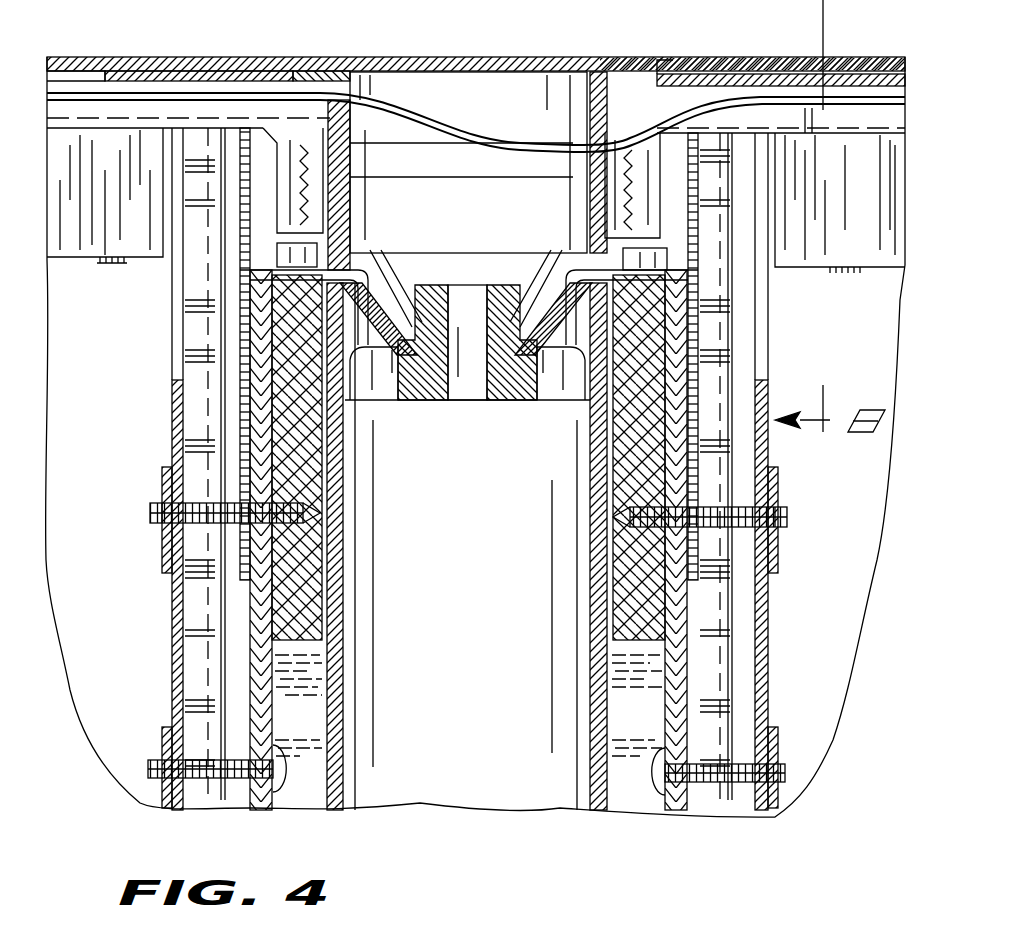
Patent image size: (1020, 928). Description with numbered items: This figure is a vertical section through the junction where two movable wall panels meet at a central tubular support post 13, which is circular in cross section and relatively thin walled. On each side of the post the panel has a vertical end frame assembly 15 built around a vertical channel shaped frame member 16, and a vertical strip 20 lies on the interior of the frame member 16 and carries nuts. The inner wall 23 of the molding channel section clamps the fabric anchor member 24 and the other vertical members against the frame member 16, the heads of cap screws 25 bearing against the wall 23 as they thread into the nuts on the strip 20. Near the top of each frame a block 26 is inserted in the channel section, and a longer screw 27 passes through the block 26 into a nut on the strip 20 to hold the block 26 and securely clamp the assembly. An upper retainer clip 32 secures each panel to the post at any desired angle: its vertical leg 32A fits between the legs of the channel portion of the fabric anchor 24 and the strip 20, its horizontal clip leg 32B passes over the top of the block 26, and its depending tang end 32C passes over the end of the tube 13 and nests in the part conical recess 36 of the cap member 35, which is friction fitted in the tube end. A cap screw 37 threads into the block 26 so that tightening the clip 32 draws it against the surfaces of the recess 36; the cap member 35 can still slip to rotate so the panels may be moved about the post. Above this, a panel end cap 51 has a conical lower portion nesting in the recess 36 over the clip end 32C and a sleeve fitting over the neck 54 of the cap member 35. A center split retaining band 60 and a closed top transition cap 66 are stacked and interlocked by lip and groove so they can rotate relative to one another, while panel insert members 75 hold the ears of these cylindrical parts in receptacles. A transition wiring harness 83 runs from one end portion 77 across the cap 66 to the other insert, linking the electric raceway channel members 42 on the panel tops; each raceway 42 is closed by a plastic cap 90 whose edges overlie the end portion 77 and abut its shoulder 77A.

The central tubular support post 13 is at (590, 675).
The vertical end frame assembly 15 is at (587, 607).
The vertical channel shaped frame member 16 is at (193, 580).
The vertical strip 20 is at (170, 670).
The inner wall 23 is at (263, 663).
The fabric anchor member 24 is at (682, 417).
The cap screw 25 is at (733, 760).
The block 26 is at (295, 600).
The longer screw 27 is at (207, 500).
The upper retainer clip 32 is at (402, 270).
The vertical leg 32A is at (253, 400).
The horizontal clip leg 32B is at (280, 258).
The depending tang end 32C is at (392, 277).
The cap member 35 is at (497, 403).
The recess 36 is at (398, 370).
The cap screw 37 is at (287, 255).
The electric raceway channel member 42 is at (97, 262).
The panel end cap 51 is at (330, 207).
The neck 54 is at (445, 290).
The center split retaining band 60 is at (347, 163).
The closed top transition cap 66 is at (367, 60).
The panel insert member 75 is at (642, 57).
The end portion 77 is at (147, 55).
The shoulder 77A is at (247, 57).
The transition wiring harness 83 is at (463, 112).
The plastic cap 90 is at (177, 55).